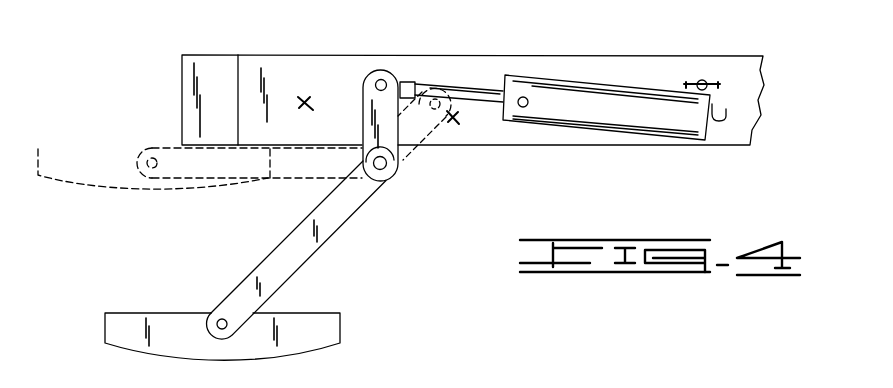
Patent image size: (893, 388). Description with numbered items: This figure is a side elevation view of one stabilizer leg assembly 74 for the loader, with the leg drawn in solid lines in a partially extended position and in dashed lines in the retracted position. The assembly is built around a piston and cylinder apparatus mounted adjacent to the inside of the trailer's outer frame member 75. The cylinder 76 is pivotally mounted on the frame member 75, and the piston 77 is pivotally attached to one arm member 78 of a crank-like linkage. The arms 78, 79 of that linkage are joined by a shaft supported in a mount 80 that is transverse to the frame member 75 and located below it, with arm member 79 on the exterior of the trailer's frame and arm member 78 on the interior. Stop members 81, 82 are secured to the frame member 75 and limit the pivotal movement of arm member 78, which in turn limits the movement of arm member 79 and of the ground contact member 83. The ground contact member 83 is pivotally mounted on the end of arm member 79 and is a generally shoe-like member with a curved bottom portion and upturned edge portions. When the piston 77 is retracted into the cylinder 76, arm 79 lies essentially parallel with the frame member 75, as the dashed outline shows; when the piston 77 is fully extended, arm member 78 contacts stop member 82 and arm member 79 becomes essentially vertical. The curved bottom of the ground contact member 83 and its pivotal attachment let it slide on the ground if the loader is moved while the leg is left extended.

The stabilizer leg assembly 74 is at (177, 63).
The frame member 75 is at (635, 68).
The cylinder 76 is at (637, 120).
The piston 77 is at (467, 97).
The arm member 78 is at (377, 70).
The arm member 79 is at (308, 250).
The mount 80 is at (386, 172).
The stop member 81 is at (457, 122).
The stop member 82 is at (306, 98).
The ground contact member 83 is at (177, 320).